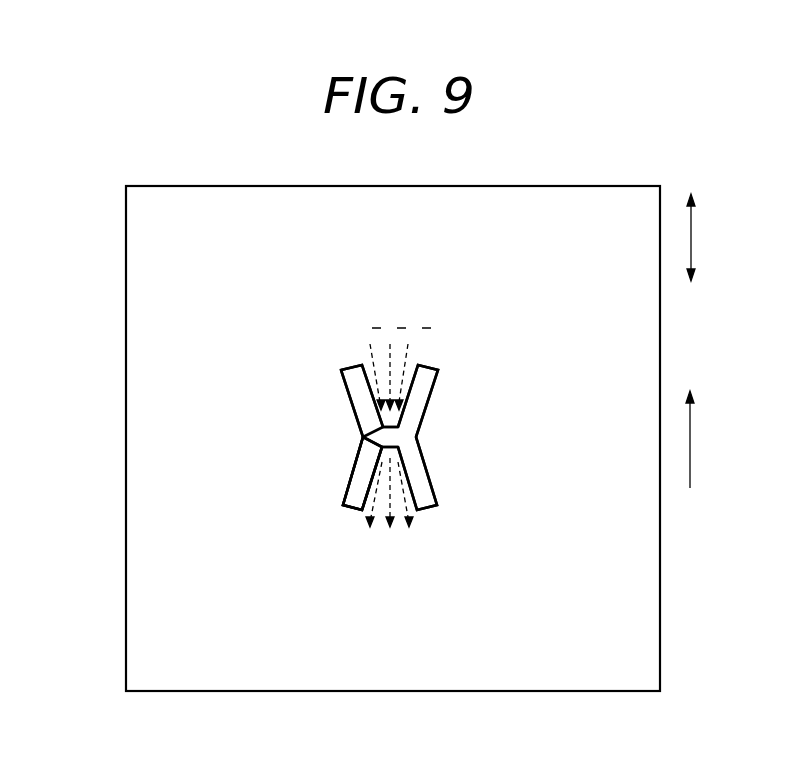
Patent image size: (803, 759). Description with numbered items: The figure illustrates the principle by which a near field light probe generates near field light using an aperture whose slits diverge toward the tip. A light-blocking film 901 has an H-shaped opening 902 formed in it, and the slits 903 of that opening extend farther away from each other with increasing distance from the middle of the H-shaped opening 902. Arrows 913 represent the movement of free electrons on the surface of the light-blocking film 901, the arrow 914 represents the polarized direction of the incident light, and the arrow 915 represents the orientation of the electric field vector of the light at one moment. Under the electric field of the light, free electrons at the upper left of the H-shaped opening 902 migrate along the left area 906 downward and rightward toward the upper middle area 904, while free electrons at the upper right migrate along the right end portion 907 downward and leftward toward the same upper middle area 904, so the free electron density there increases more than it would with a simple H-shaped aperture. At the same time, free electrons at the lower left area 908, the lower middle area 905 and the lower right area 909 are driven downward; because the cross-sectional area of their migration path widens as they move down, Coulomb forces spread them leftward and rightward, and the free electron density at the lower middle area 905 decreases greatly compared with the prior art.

The light-blocking film 901 is at (168, 363).
The H-shaped opening 902 is at (421, 455).
The slits 903 is at (343, 506).
The upper middle area 904 is at (403, 435).
The lower middle area 905 is at (382, 436).
The left area 906 is at (366, 391).
The right end portion 907 is at (410, 391).
The lower left area 908 is at (363, 475).
The lower right area 909 is at (406, 472).
The arrows representing electron movement 913 is at (372, 362).
The arrow representing polarized direction of incident light 914 is at (691, 240).
The arrow representing electric field vector orientation 915 is at (690, 460).